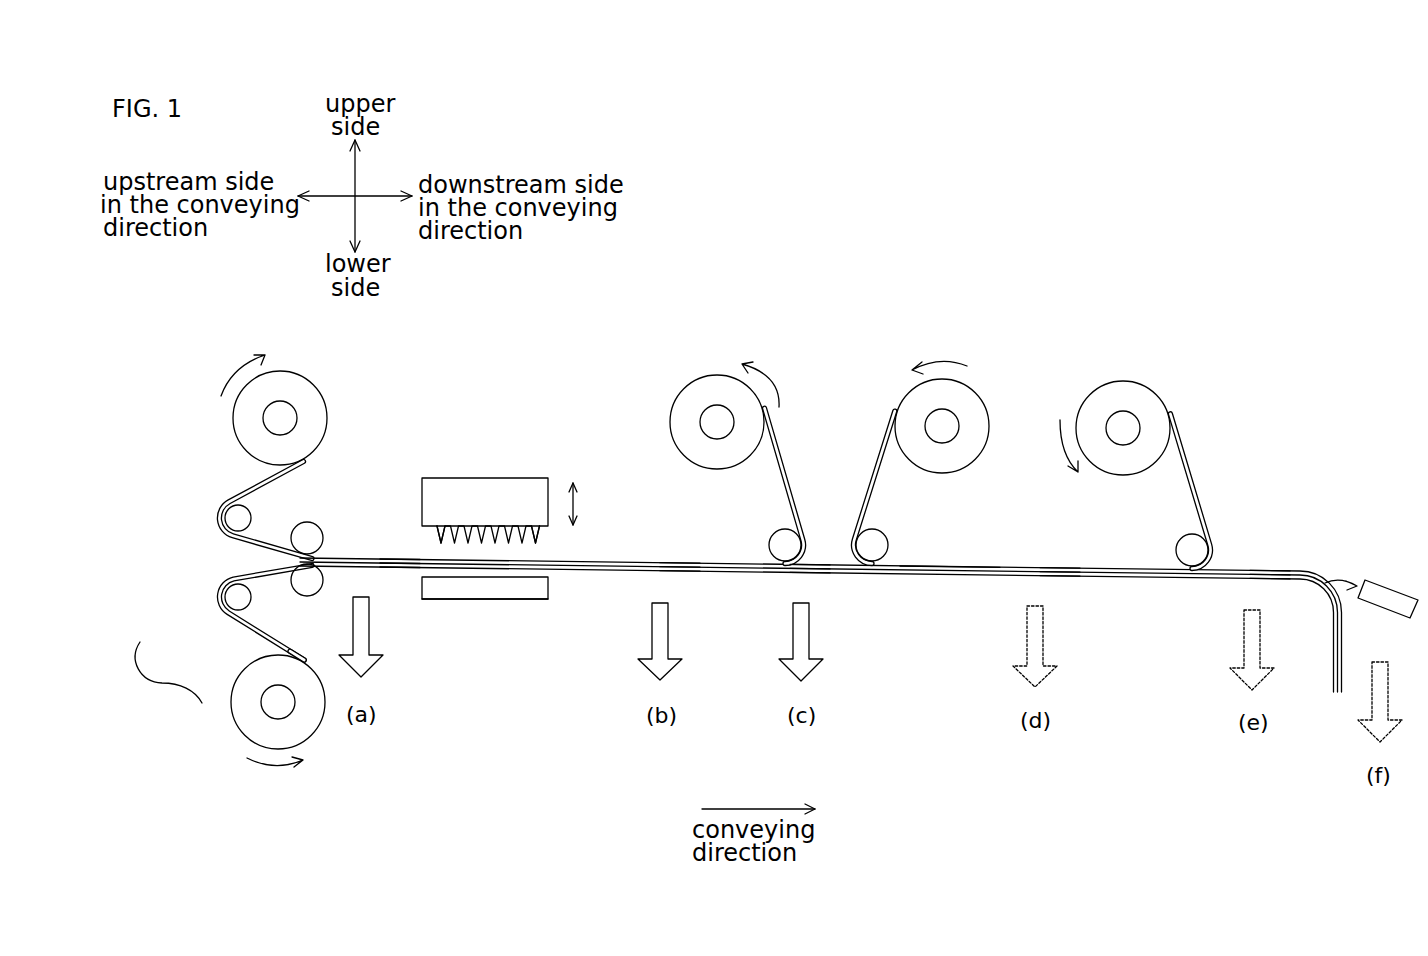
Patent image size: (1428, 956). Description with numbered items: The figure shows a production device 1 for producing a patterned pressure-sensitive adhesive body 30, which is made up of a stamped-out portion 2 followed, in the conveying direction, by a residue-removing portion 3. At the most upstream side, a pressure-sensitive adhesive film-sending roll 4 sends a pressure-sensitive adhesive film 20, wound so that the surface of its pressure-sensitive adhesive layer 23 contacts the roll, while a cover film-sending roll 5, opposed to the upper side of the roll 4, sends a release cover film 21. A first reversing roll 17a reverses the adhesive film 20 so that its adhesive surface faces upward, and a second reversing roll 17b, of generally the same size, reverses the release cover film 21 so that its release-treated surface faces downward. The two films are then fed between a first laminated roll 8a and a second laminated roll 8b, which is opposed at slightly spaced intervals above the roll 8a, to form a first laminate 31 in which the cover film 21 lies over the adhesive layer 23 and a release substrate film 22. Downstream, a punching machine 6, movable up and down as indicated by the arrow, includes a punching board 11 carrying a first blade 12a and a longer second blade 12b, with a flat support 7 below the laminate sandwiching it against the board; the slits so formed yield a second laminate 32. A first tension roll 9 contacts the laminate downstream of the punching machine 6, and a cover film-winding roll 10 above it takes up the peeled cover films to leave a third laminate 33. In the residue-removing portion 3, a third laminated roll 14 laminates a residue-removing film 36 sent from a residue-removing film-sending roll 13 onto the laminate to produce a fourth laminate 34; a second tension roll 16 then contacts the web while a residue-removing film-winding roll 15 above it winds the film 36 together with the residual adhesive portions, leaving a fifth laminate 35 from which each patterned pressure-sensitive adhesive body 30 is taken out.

The production device 1 is at (821, 665).
The stamped-out portion 2 is at (499, 692).
The residue-removing portion 3 is at (955, 682).
The pressure-sensitive adhesive film-sending roll 4 is at (312, 736).
The cover film-sending roll 5 is at (324, 398).
The punching machine 6 is at (494, 525).
The support 7 is at (548, 588).
The first laminated roll 8a is at (324, 580).
The second laminated roll 8b is at (311, 521).
The first tension roll 9 is at (771, 537).
The cover film-winding roll 10 is at (685, 389).
The punching board 11 is at (422, 500).
The first blade 12a is at (509, 540).
The second blade 12b is at (438, 533).
The residue-removing film-sending roll 13 is at (976, 393).
The third laminated roll 14 is at (886, 537).
The residue-removing film-winding roll 15 is at (1157, 394).
The second tension roll 16 is at (1177, 544).
The first reversing roll 17a is at (252, 601).
The second reversing roll 17b is at (252, 516).
The pressure-sensitive adhesive film 20 is at (166, 679).
The release cover film 21 is at (262, 485).
The release substrate film 22 is at (252, 620).
The pressure-sensitive adhesive layer 23 is at (260, 638).
The patterned pressure-sensitive adhesive body 30 is at (1392, 587).
The first laminate 31 is at (402, 580).
The second laminate 32 is at (683, 582).
The third laminate 33 is at (806, 584).
The fourth laminate 34 is at (1062, 587).
The fifth laminate 35 is at (1276, 559).
The residue-removing film 36 is at (878, 462).